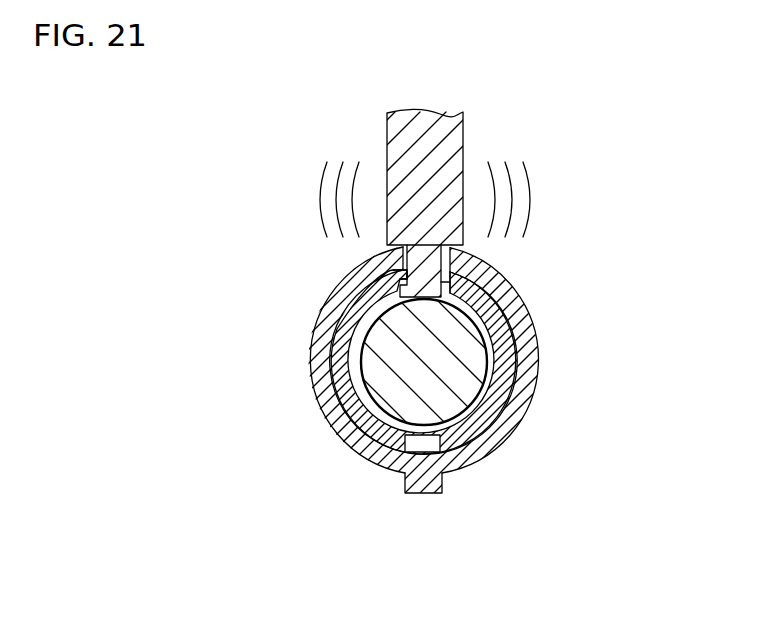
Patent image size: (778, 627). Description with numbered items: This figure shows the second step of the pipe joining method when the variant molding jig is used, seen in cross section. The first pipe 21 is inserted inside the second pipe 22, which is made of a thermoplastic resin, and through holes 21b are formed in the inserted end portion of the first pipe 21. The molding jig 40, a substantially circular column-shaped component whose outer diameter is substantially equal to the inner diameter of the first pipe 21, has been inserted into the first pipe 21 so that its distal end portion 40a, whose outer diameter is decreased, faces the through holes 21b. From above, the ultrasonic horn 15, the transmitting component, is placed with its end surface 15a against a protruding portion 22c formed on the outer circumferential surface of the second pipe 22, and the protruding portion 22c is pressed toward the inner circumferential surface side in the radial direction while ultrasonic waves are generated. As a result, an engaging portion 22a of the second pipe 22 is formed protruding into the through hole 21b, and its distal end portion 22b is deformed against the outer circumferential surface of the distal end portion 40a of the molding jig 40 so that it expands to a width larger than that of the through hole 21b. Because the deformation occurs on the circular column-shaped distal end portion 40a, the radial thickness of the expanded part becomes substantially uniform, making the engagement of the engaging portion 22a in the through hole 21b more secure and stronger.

The ultrasonic horn 15 is at (453, 158).
The end surface 15a is at (452, 271).
The first pipe 21 is at (367, 425).
The through holes 21b is at (405, 270).
The second pipe 22 is at (477, 458).
The engaging portions 22a is at (423, 278).
The distal end portions 22b is at (441, 298).
The protruding portions 22c is at (416, 482).
The molding jig 40 is at (477, 362).
The distal end portion 40a is at (470, 392).